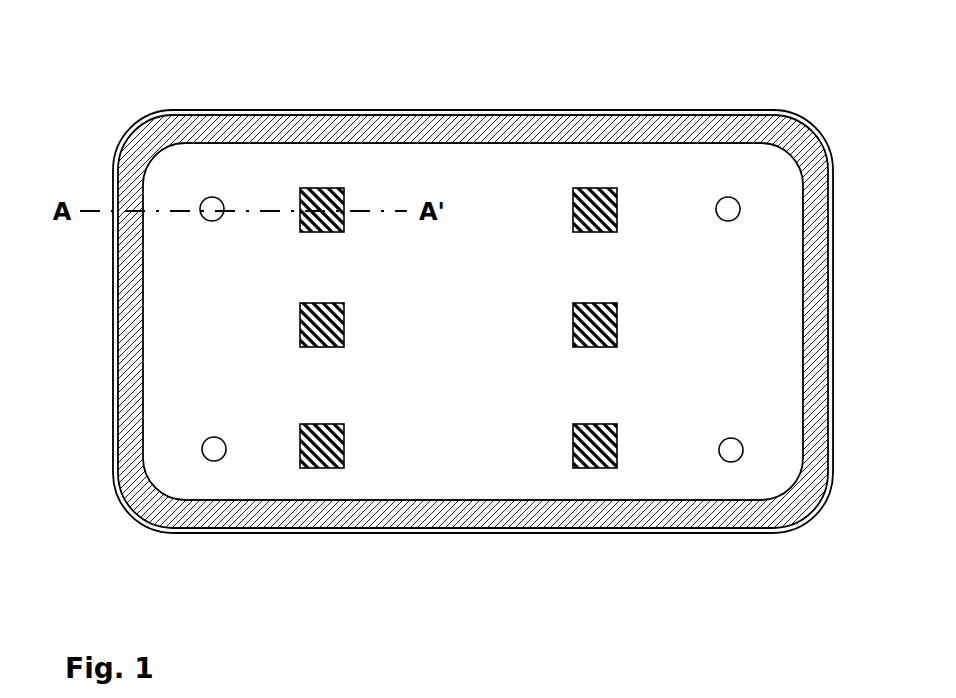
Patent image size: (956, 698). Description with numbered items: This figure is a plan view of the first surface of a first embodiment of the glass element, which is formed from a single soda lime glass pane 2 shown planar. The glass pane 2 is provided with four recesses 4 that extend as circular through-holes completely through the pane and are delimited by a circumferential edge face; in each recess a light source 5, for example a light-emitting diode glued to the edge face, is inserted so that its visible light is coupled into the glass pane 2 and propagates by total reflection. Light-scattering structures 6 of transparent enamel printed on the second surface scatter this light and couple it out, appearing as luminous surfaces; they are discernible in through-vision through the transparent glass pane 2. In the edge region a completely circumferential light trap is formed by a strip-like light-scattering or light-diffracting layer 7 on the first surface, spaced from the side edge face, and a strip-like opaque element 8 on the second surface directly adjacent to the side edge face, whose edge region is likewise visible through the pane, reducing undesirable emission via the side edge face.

The glass pane 2 is at (482, 195).
The recesses 4 is at (523, 329).
The light source 5 is at (216, 203).
The light-scattering structures 6 is at (597, 468).
The light-scattering or light-diffracting layer 7 is at (410, 128).
The opaque element 8 is at (362, 110).